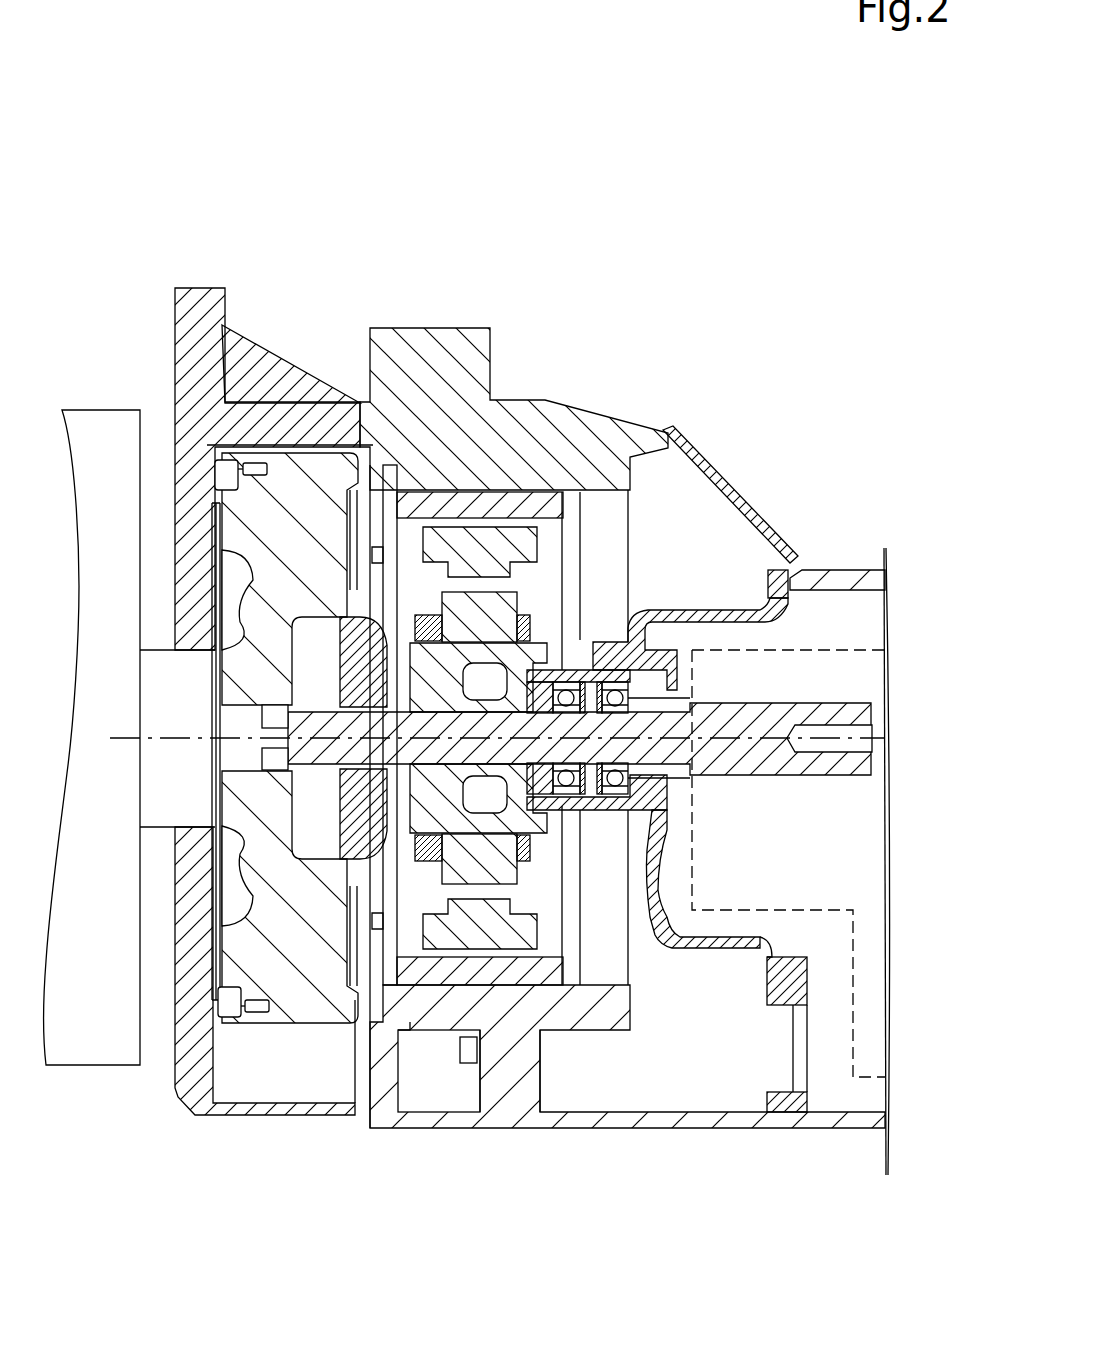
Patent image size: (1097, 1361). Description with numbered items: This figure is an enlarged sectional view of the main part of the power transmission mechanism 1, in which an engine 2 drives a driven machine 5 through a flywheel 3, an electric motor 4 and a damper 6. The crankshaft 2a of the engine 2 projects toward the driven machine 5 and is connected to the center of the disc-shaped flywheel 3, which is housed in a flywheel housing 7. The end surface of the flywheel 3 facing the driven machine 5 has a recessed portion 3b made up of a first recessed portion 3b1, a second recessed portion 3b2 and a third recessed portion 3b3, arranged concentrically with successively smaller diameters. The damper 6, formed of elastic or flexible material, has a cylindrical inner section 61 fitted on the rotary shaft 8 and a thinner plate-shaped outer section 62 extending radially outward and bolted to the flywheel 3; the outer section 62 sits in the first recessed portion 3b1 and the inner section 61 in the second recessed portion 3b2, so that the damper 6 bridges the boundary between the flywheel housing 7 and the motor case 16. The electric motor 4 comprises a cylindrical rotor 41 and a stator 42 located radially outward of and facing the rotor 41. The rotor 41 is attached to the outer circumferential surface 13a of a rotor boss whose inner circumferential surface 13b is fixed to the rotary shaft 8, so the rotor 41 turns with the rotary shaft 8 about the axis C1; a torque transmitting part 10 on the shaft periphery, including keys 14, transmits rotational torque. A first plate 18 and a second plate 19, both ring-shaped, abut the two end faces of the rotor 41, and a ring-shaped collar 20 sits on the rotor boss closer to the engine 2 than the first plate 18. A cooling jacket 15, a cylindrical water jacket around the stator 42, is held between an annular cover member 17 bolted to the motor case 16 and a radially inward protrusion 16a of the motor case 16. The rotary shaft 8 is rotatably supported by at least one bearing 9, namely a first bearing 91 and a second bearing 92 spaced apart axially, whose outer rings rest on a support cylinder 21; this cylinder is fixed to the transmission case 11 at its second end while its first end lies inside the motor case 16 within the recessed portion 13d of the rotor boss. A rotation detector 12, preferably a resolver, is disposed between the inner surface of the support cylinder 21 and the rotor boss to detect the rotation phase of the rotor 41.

The power transmission mechanism 1 is at (563, 278).
The engine 2 is at (100, 405).
The crankshaft 2a is at (160, 648).
The flywheel 3 is at (275, 398).
The recessed portion 3b is at (343, 723).
The first recessed portion 3b1 is at (430, 1010).
The second recessed portion 3b2 is at (362, 560).
The third recessed portion 3b3 is at (297, 645).
The electric motor 4 is at (505, 985).
The rotor 41 is at (522, 635).
The stator 42 is at (500, 545).
The driven machine 5 is at (808, 650).
The damper 6 is at (349, 1166).
The inner section 61 is at (300, 853).
The outer section 62 is at (360, 877).
The flywheel housing 7 is at (240, 335).
The rotary shaft 8 is at (843, 704).
The bearing 9 is at (730, 668).
The first bearing 91 is at (680, 513).
The second bearing 92 is at (650, 837).
The torque transmitting part 10 is at (583, 807).
The transmission case 11 is at (645, 560).
The rotation detector 12 is at (612, 660).
The outer circumferential surface 13a is at (580, 805).
The inner circumferential surface 13b is at (660, 800).
The recessed portion 13d is at (636, 805).
The key 14 is at (553, 683).
The cooling jacket 15 is at (447, 1022).
The motor case 16 is at (433, 1033).
The protrusion 16a is at (615, 1010).
The cover member 17 is at (358, 1000).
The first plate 18 is at (440, 650).
The second plate 19 is at (432, 617).
The collar 20 is at (400, 490).
The support cylinder 21 is at (745, 605).
The axis C1 is at (762, 742).